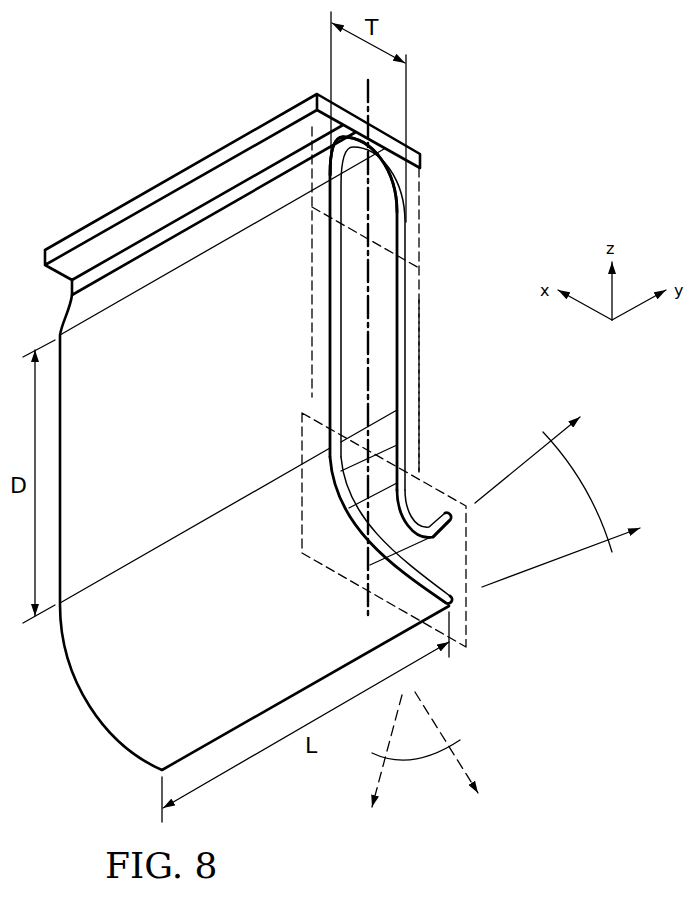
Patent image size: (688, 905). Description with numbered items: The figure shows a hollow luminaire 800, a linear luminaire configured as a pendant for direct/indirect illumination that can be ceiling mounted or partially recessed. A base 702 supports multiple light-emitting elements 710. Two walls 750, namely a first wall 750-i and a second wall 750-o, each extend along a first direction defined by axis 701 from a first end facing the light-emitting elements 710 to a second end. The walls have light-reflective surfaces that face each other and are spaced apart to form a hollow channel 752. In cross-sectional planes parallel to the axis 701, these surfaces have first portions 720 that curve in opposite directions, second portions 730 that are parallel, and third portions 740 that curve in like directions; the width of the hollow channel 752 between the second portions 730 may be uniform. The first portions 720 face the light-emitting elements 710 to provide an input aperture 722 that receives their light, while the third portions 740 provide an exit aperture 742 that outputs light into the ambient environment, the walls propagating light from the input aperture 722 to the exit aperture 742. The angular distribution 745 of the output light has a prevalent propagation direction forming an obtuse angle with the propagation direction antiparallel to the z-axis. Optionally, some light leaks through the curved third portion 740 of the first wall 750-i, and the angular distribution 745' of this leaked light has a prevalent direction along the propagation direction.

The hollow luminaire 800 is at (93, 127).
The base 702 is at (297, 107).
The axis 701 is at (372, 100).
The input aperture 722 is at (358, 155).
The light-emitting elements 710 is at (355, 176).
The first portions 720 is at (425, 218).
The hollow channel 752 is at (378, 340).
The second portions 730 is at (422, 360).
The exit aperture 742 is at (443, 558).
The angular distribution of output light 745 is at (557, 520).
The third portions 740 is at (472, 620).
The angular distribution of leaked light 745' is at (379, 754).
The walls 750 is at (298, 370).
The second wall 750-o is at (395, 380).
The first wall 750-i is at (327, 382).